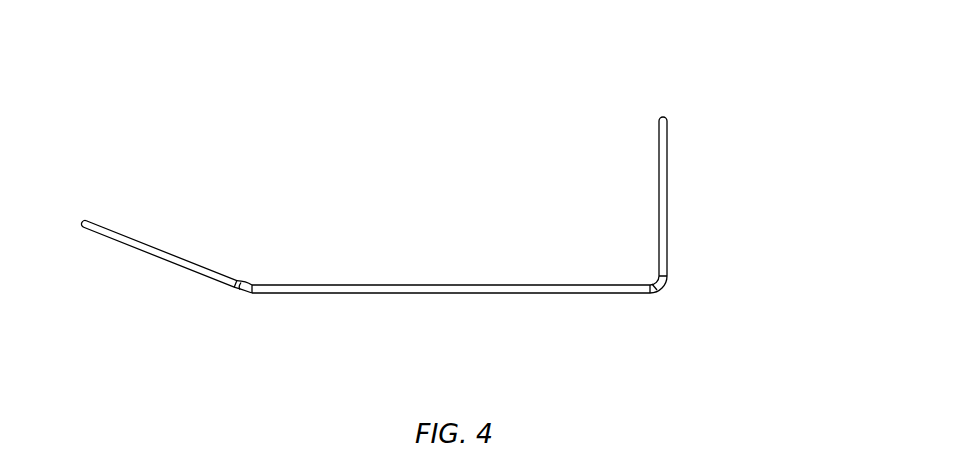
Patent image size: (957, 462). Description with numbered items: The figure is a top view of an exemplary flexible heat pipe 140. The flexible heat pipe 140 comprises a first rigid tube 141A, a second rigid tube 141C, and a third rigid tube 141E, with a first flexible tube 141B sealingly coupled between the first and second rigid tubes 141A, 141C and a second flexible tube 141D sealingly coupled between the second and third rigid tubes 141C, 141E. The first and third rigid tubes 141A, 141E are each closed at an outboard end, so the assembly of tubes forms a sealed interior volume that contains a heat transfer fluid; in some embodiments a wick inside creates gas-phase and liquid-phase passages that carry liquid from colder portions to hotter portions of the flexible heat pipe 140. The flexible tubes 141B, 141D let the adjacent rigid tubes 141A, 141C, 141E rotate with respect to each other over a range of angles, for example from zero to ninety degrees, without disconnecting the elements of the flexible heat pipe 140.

The flexible heat pipe 140 is at (415, 72).
The first rigid tube 141A is at (158, 226).
The first flexible tube 141B is at (240, 288).
The second rigid tube 141C is at (647, 302).
The second flexible tube 141D is at (660, 288).
The third rigid tube 141E is at (676, 117).